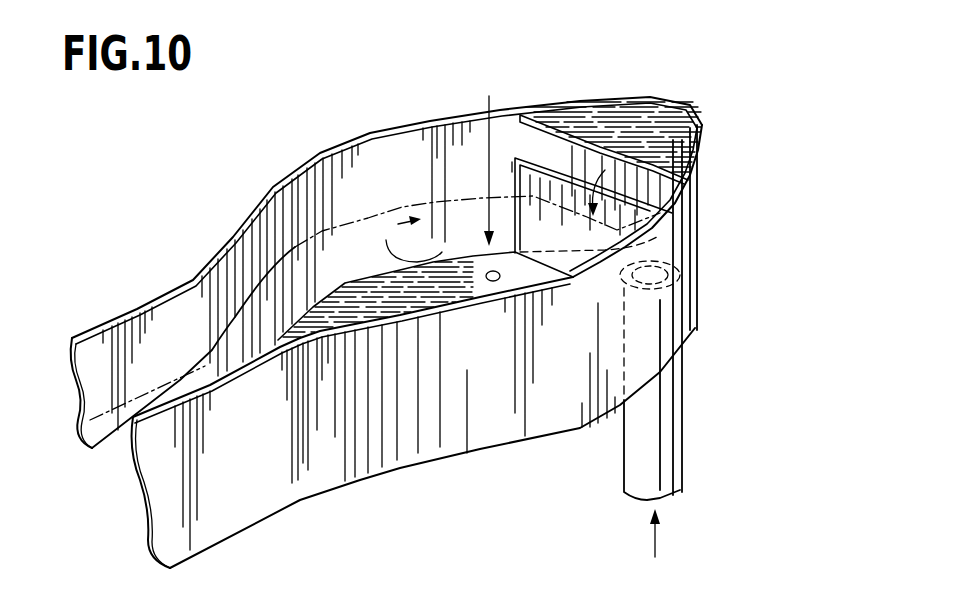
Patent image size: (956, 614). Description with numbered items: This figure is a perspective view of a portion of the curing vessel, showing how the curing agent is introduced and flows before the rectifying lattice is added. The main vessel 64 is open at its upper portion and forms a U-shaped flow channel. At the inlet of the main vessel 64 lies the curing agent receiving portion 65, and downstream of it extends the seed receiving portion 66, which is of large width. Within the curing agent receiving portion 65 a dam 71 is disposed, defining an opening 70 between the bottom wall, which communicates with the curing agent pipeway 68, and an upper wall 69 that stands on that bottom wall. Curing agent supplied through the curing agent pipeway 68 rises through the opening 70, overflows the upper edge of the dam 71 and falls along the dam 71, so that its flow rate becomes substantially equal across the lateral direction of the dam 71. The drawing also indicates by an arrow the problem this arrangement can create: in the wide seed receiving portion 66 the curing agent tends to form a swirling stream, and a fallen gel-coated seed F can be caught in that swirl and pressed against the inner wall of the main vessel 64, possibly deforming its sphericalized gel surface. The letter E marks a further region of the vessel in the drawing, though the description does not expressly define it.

The main vessel 64 is at (362, 145).
The curing agent receiving portion 65 is at (627, 82).
The seed receiving portion 66 is at (463, 187).
The curing agent pipeway 68 is at (680, 399).
The upper wall 69 is at (677, 120).
The opening 70 is at (657, 190).
The dam 71 is at (665, 214).
The recess E is at (386, 240).
The gel-coated seed F is at (490, 282).